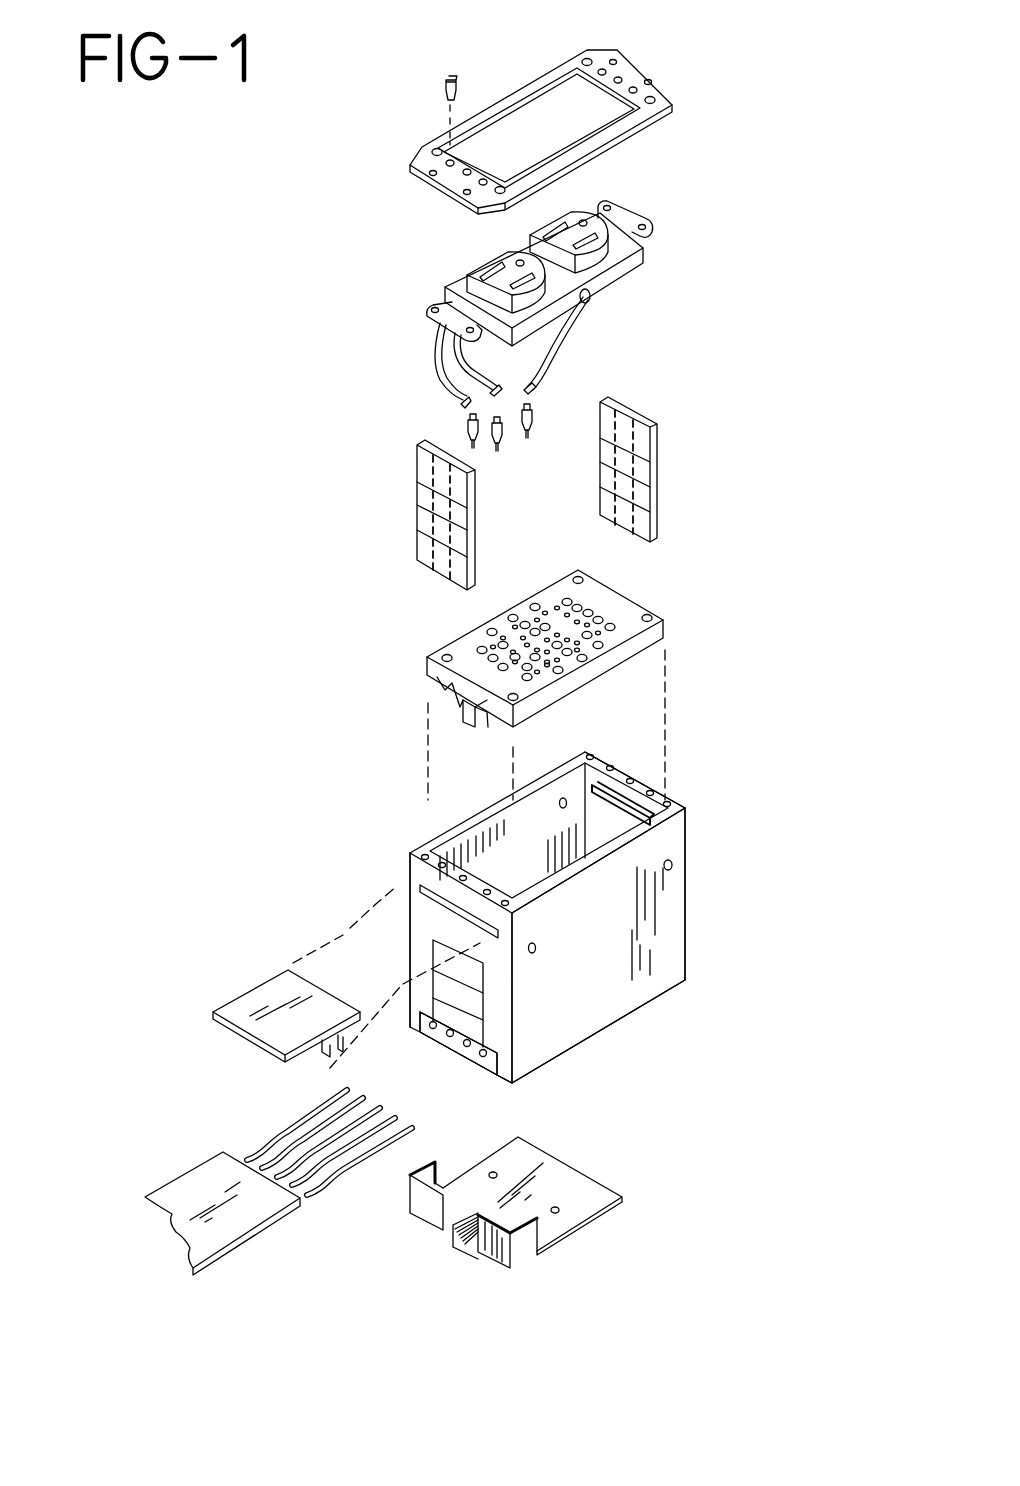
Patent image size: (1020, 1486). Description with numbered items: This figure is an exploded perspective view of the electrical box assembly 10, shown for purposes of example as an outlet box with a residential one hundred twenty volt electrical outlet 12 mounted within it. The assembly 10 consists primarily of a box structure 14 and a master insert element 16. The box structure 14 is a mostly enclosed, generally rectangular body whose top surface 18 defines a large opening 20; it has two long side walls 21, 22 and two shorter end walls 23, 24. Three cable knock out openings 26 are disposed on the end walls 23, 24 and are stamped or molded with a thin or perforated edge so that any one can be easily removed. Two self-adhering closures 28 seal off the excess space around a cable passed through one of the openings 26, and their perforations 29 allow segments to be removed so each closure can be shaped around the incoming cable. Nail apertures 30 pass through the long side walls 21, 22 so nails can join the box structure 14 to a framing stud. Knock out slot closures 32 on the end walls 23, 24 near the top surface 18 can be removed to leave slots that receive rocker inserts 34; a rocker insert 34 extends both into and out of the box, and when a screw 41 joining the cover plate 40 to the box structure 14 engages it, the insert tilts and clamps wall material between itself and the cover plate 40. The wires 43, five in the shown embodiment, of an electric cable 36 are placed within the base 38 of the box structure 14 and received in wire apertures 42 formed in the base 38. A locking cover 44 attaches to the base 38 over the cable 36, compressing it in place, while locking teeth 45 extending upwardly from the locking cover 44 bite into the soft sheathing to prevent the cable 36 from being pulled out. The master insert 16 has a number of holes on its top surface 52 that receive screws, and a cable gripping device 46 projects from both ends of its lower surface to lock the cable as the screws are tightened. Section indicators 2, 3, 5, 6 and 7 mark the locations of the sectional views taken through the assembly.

The electrical box assembly 10 is at (280, 573).
The residential electrical outlet 12 is at (627, 271).
The box structure 14 is at (540, 917).
The master insert element 16 is at (570, 675).
The top surface 18 is at (655, 786).
The large opening 20 is at (533, 810).
The long side wall 21 is at (637, 995).
The long side wall 22 is at (460, 840).
The end wall 23 is at (507, 1047).
The end wall 24 is at (620, 790).
The cable knock out openings 26 is at (472, 1030).
The self-adhering closures 28 is at (478, 500).
The perforations 29 is at (417, 527).
The nail apertures 30 is at (673, 865).
The knock out slot closures 32 is at (593, 783).
The rocker inserts 34 is at (257, 997).
The electric cable 36 is at (182, 1202).
The base 38 is at (435, 1028).
The cover plate 40 is at (627, 137).
The screw 41 is at (445, 79).
The wire apertures 42 is at (462, 1047).
The wires 43 is at (353, 1160).
The locking cover 44 is at (518, 1232).
The locking teeth 45 is at (460, 1238).
The cable gripping device 46 is at (477, 713).
The top surface 52 is at (463, 645).
The section line 2 is at (693, 855).
The section line 3 is at (640, 775).
The section line 5 is at (625, 592).
The section line 6 is at (502, 600).
The section line 7 is at (542, 105).